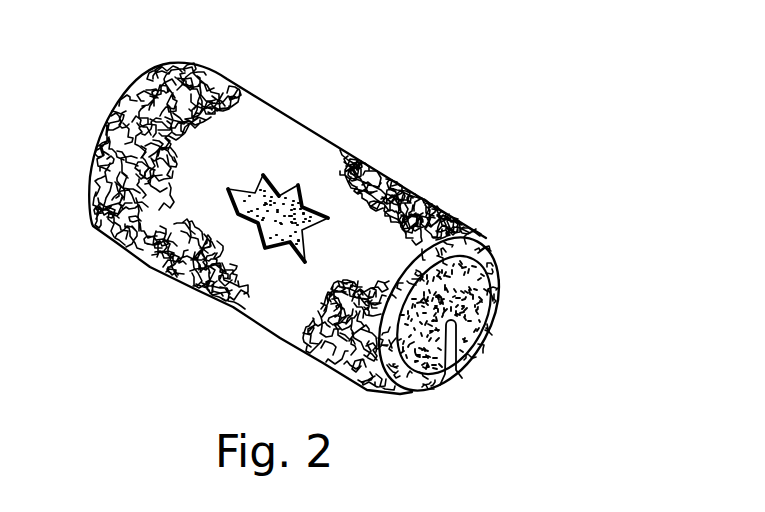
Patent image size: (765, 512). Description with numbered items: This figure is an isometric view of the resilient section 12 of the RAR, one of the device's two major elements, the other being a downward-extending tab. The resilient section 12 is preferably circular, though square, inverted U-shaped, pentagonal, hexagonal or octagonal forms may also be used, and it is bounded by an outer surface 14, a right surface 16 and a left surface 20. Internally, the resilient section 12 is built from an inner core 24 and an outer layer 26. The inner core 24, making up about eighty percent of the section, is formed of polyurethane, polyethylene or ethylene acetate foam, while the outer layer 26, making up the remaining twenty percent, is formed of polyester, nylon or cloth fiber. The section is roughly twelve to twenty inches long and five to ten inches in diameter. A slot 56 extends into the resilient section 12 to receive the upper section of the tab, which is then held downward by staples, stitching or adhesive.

The resilient section 12 is at (318, 68).
The outer surface 14 is at (373, 207).
The right surface 16 is at (475, 290).
The left surface 20 is at (137, 83).
The inner core 24 is at (282, 193).
The outer layer 26 is at (473, 243).
The slot 56 is at (460, 363).